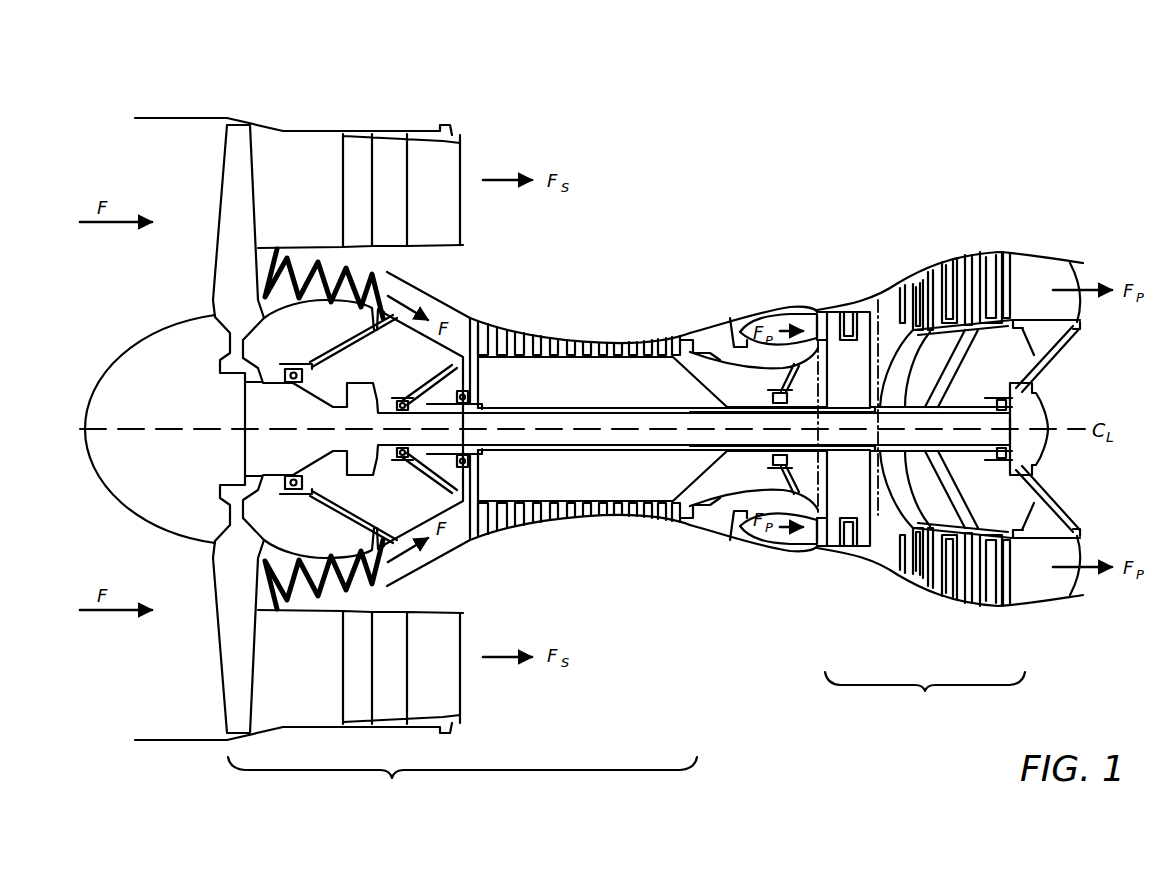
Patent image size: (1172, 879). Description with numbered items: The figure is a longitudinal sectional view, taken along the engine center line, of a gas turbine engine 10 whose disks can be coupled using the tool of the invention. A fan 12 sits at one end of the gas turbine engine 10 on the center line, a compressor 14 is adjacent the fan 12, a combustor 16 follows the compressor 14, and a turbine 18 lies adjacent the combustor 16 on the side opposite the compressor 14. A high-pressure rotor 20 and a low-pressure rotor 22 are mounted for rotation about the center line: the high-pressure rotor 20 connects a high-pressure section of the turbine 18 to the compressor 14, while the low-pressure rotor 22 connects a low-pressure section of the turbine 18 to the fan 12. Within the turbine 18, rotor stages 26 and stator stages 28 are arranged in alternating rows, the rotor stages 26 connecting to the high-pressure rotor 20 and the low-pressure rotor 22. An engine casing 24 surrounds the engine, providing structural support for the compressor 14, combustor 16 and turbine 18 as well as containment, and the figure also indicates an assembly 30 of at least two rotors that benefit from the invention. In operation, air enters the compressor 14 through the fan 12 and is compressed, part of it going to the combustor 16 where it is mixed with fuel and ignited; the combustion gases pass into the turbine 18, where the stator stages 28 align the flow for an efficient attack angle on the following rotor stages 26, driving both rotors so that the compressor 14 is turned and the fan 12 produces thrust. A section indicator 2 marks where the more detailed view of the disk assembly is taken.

The gas turbine engine 10 is at (118, 96).
The fan 12 is at (235, 198).
The compressor 14 is at (462, 781).
The combustor 16 is at (774, 307).
The turbine 18 is at (925, 696).
The high-pressure rotor 20 is at (688, 488).
The low-pressure rotor 22 is at (605, 435).
The engine casing 24 is at (750, 315).
The rotor stages 26 is at (830, 310).
The stator stages 28 is at (847, 312).
The assembly of at least two rotors 30 is at (900, 327).
The section line for FIG. 2 is at (927, 325).